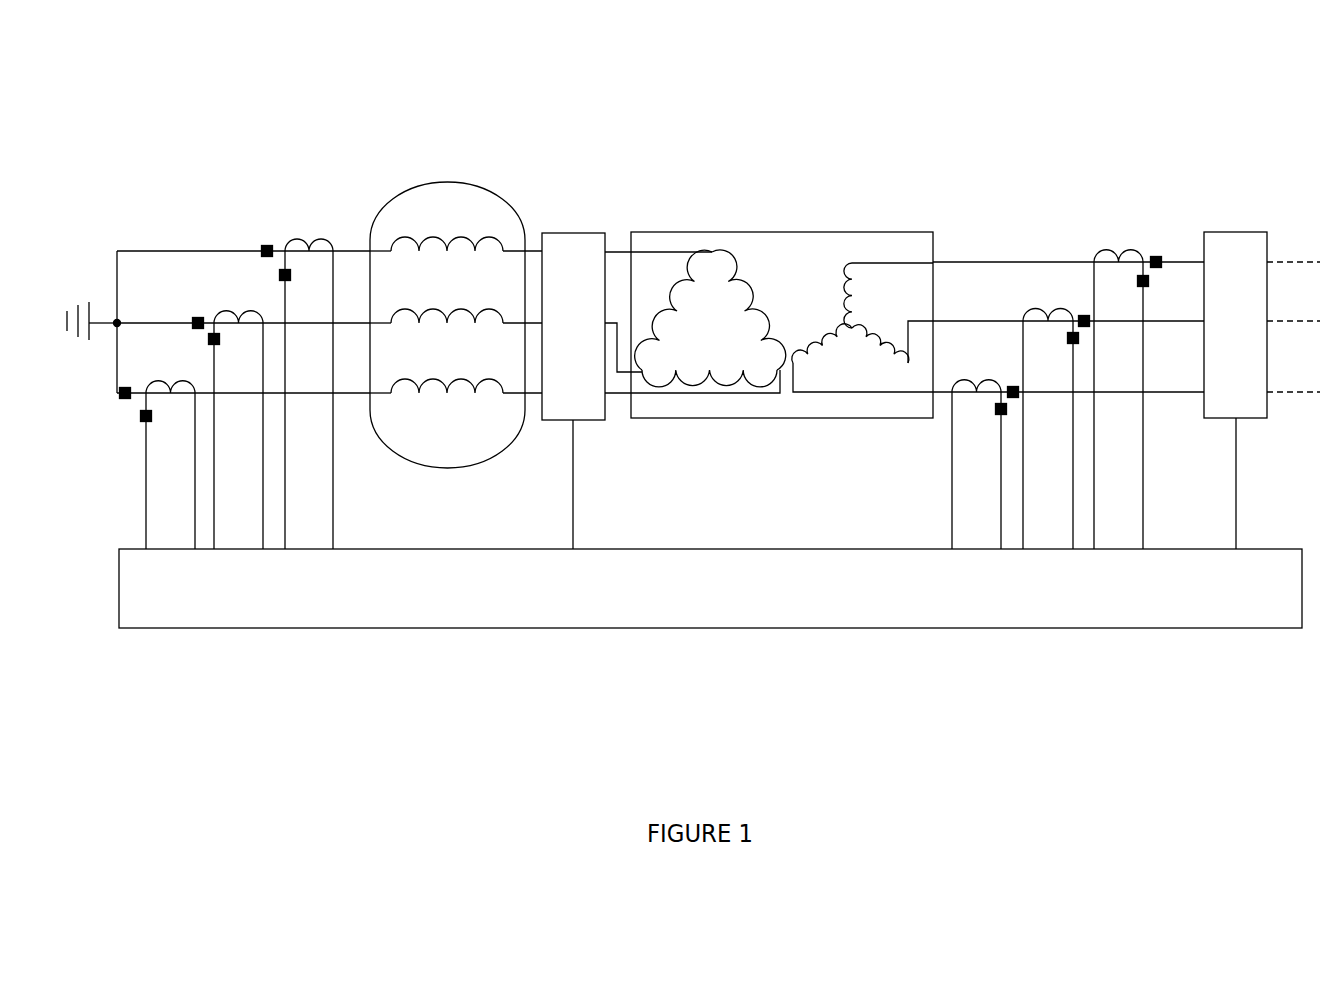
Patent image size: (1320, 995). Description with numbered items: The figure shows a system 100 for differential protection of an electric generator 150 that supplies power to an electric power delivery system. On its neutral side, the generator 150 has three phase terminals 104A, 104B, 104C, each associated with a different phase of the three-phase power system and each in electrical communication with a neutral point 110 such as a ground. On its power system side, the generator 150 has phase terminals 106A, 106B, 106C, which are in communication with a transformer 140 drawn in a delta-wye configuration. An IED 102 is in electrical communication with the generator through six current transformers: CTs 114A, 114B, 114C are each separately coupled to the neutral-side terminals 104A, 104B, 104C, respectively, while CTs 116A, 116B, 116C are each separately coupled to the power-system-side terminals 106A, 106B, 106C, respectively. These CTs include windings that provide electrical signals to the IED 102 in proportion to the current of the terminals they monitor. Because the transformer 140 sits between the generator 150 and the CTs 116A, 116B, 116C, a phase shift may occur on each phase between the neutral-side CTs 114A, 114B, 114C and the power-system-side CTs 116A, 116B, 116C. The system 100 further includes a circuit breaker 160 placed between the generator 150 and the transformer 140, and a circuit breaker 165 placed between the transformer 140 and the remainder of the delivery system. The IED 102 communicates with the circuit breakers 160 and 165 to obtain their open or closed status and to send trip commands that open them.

The system 100 is at (823, 76).
The IED 102 is at (740, 549).
The neutral point 110 is at (80, 302).
The phase terminal 104A is at (180, 251).
The phase terminal 104B is at (142, 323).
The phase terminal 104C is at (352, 393).
The CT 114A is at (316, 221).
The CT 114B is at (228, 314).
The CT 114C is at (162, 384).
The electric generator 150 is at (440, 183).
The circuit breaker 160 is at (580, 233).
The transformer 140 is at (780, 232).
The phase terminal 106A is at (1018, 243).
The phase terminal 106B is at (1172, 301).
The phase terminal 106C is at (1174, 392).
The CT 116A is at (1118, 250).
The CT 116B is at (1036, 310).
The CT 116C is at (984, 371).
The circuit breaker 165 is at (1246, 232).